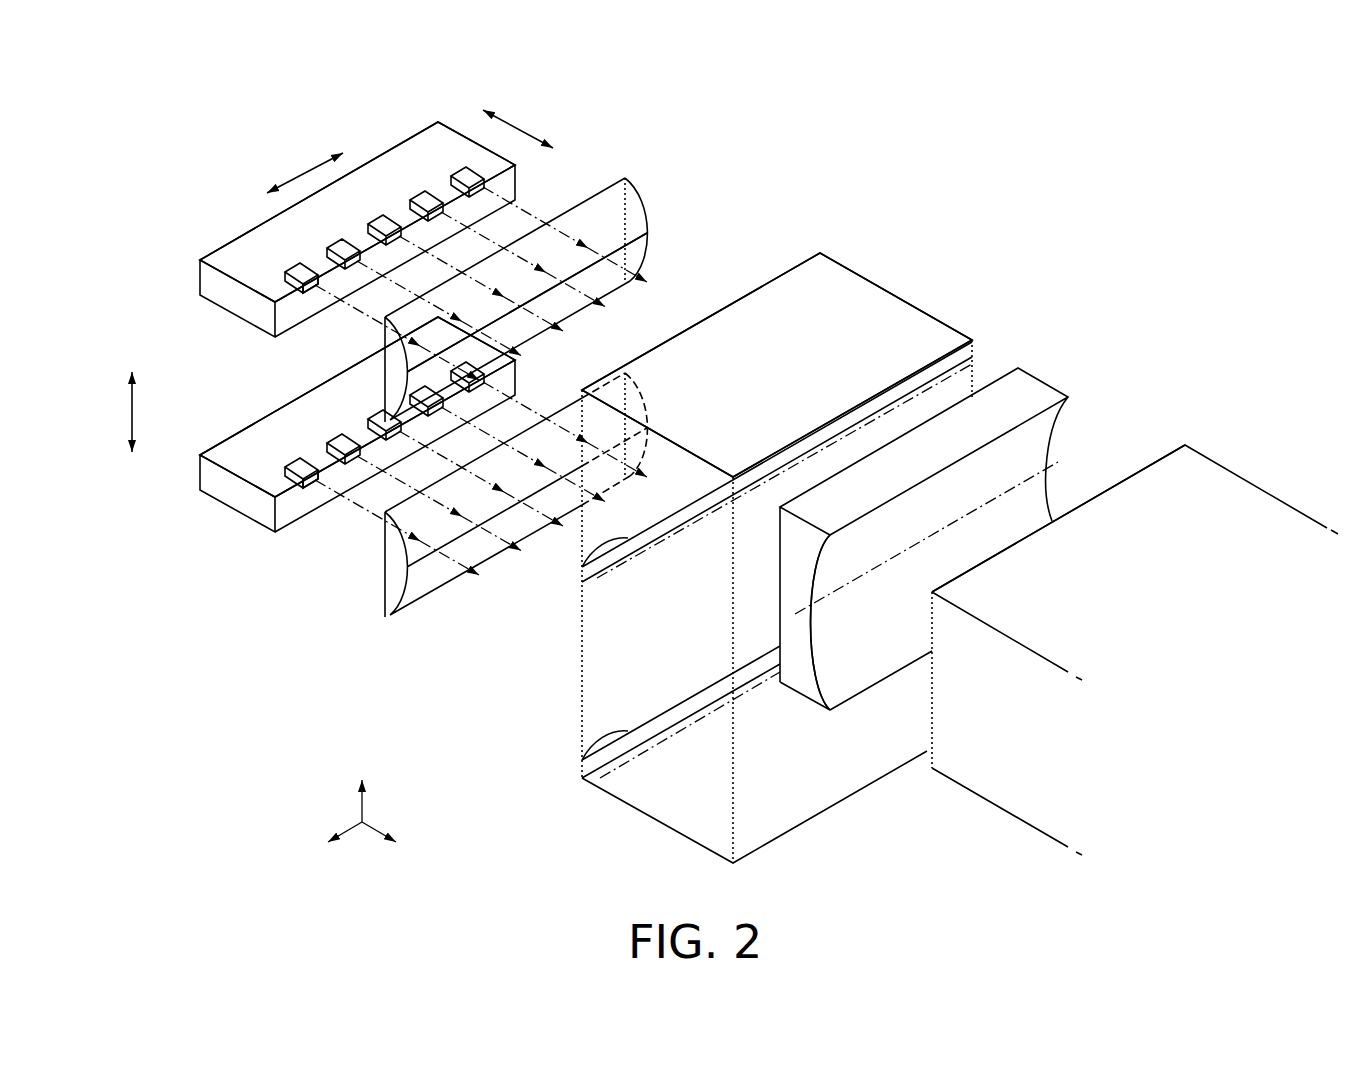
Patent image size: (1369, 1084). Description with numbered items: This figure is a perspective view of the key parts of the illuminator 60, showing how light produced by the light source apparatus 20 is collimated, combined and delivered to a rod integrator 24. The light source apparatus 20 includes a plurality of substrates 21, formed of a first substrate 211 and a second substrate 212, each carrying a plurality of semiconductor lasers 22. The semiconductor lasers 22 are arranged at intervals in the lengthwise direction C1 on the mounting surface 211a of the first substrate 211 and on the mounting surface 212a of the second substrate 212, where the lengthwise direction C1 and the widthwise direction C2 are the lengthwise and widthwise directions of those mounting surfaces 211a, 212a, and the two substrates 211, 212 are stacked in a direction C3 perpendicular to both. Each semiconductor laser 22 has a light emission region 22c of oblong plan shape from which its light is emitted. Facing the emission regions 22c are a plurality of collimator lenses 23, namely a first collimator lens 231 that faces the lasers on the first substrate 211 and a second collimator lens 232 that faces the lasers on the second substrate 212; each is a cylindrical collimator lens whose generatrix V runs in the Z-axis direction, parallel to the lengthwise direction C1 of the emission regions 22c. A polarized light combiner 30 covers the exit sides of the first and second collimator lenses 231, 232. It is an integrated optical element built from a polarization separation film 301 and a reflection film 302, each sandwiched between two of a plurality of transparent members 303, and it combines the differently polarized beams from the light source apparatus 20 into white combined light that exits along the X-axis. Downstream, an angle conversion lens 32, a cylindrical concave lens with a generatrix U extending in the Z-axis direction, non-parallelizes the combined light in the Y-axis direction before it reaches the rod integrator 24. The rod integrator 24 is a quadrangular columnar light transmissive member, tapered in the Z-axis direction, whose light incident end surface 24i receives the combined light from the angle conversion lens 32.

The light source apparatus 20 is at (414, 352).
The substrates 21 is at (307, 327).
The first substrate 211 is at (307, 229).
The second substrate 212 is at (308, 425).
The mounting surface 211a is at (225, 258).
The mounting surface 212a is at (225, 453).
The semiconductor lasers 22 is at (349, 361).
The light emission region 22c is at (308, 283).
The collimator lenses 23 is at (519, 414).
The first collimator lens 231 is at (540, 386).
The second collimator lens 232 is at (417, 593).
The illuminator 60 is at (920, 469).
The polarized light combiner 30 is at (737, 527).
The polarization separation film 301 is at (582, 568).
The reflection film 302 is at (582, 762).
The transparent members 303 is at (797, 287).
The angle conversion lens 32 is at (946, 510).
The rod integrator 24 is at (1107, 619).
The light incident end surface 24i is at (965, 768).
The lengthwise direction C1 is at (297, 173).
The widthwise direction C2 is at (536, 133).
The direction C3 is at (132, 410).
The generatrix V is at (660, 233).
The generatrix U is at (1060, 463).